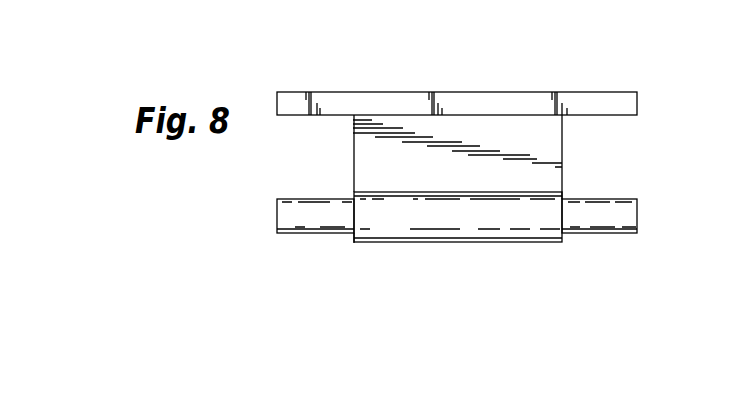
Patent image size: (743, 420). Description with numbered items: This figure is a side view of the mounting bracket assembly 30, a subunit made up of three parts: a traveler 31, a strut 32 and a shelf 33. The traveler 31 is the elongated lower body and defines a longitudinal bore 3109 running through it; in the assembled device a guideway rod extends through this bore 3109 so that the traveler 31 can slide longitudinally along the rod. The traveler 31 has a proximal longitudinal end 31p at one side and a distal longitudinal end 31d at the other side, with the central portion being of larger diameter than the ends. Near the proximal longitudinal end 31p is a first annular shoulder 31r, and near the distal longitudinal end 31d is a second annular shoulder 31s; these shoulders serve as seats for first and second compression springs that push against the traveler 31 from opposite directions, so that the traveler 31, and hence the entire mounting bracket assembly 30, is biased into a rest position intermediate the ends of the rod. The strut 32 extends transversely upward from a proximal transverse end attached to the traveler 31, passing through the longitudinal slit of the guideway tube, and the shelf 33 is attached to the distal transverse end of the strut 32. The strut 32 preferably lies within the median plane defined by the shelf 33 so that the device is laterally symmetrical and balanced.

The mounting bracket assembly 30 is at (281, 52).
The shelf 33 is at (616, 97).
The strut 32 is at (403, 171).
The traveler 31 is at (405, 226).
The first annular shoulder 31r is at (562, 196).
The second annular shoulder 31s is at (353, 239).
The distal longitudinal end of the traveler 31d is at (277, 212).
The proximal longitudinal end of the traveler 31p is at (637, 215).
The longitudinal bore 3109 is at (246, 218).